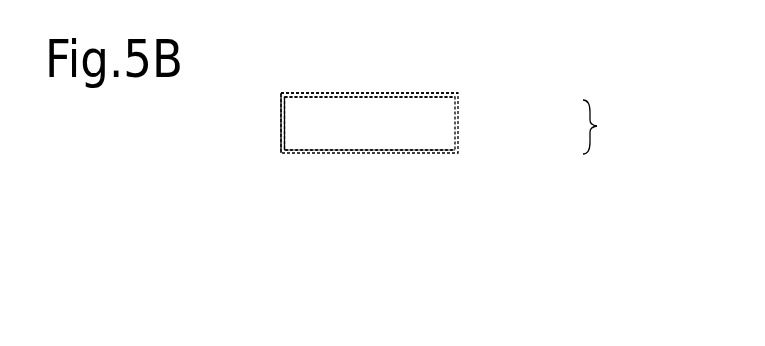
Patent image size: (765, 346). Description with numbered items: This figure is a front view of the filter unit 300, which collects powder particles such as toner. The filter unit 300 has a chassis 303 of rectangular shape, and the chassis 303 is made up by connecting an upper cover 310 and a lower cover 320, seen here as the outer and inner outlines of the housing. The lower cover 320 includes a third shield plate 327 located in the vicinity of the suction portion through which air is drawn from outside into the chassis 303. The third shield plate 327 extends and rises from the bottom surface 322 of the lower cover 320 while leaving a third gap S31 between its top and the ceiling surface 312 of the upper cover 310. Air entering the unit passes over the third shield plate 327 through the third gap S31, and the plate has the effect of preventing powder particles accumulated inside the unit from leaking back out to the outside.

The filter unit 300 is at (243, 192).
The chassis 303 is at (613, 127).
The upper cover 310 is at (460, 110).
The ceiling surface 312 is at (320, 98).
The lower cover 320 is at (460, 135).
The bottom surface 322 is at (315, 150).
The third shield plate 327 is at (340, 135).
The third gap S31 is at (400, 100).